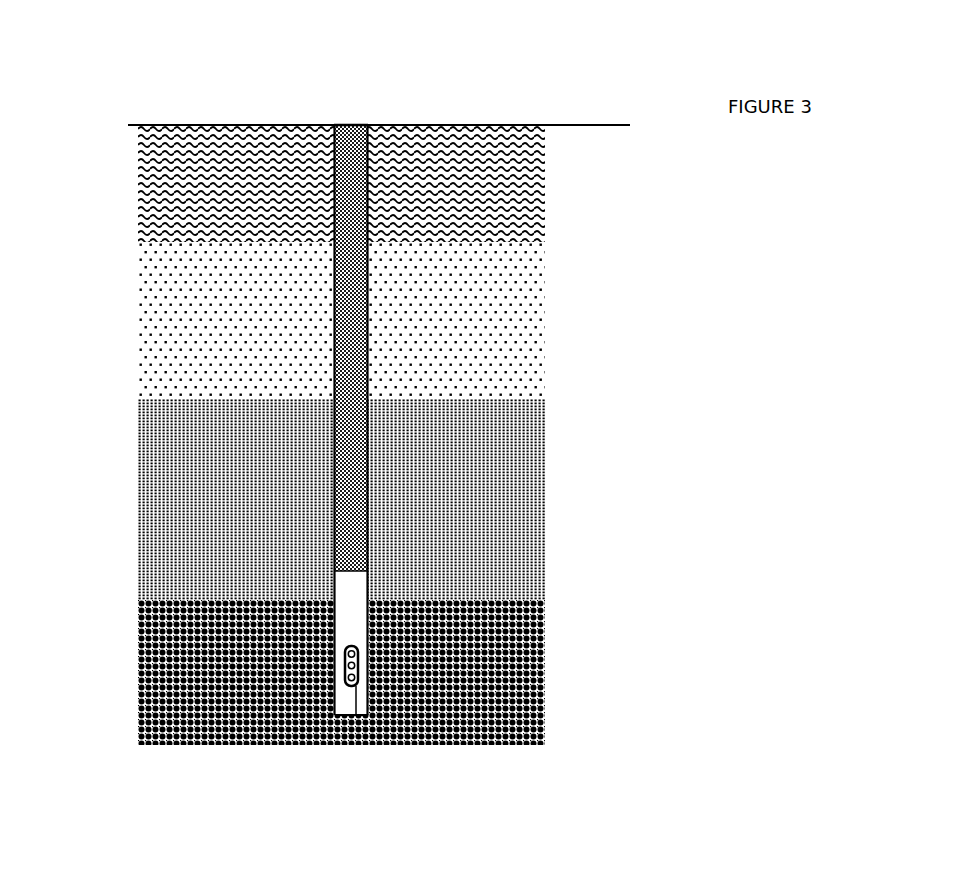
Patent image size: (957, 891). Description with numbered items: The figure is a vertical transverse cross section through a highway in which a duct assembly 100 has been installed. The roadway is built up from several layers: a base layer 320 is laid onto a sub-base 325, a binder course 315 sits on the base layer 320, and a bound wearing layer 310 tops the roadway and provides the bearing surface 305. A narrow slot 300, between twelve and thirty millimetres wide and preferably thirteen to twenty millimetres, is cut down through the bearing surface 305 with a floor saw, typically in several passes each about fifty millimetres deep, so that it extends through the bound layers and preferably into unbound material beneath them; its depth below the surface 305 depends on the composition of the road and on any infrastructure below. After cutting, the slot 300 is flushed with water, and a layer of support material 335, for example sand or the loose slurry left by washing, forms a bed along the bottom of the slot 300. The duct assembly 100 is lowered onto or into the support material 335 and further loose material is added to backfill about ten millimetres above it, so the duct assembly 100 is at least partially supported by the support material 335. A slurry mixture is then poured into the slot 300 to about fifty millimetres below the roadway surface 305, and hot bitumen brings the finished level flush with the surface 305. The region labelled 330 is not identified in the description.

The duct assembly 100 is at (349, 707).
The slot 300 is at (247, 431).
The bearing surface 305 is at (455, 117).
The bound wearing layer 310 is at (537, 190).
The binder course 315 is at (537, 297).
The base layer 320 is at (540, 482).
The sub-base 325 is at (540, 622).
The casing 330 is at (338, 453).
The support material 335 is at (350, 597).